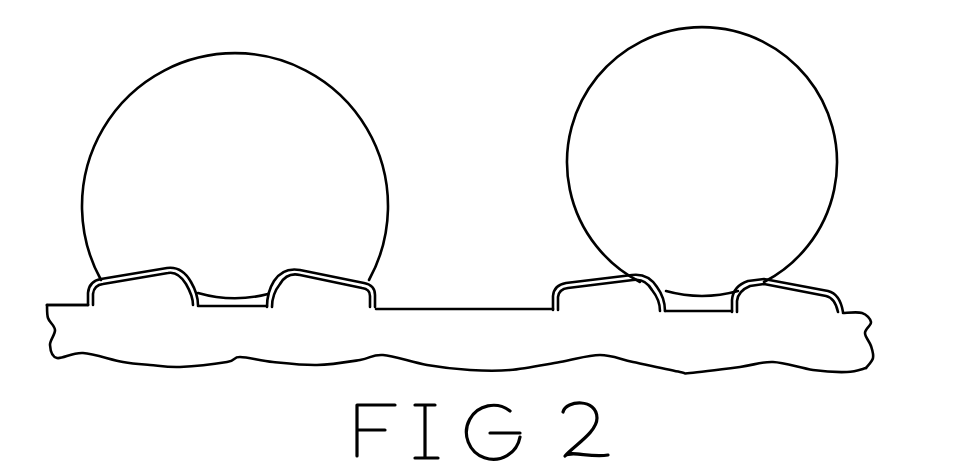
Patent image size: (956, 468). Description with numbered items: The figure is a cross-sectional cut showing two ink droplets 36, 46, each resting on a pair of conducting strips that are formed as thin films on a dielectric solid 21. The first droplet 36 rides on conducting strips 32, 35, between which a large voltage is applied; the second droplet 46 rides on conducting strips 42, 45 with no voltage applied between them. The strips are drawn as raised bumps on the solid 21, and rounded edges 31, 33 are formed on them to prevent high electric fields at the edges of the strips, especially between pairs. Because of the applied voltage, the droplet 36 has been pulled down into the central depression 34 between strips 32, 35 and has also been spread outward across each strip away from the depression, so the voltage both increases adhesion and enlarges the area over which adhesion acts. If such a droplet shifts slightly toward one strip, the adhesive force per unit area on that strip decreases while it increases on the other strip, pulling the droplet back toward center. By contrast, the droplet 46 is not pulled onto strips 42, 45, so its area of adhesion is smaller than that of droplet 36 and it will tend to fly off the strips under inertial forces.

The dielectric solid 21 is at (460, 339).
The rounded edge 31 is at (88, 292).
The conducting strip 32 is at (137, 278).
The rounded edge 33 is at (187, 277).
The depression 34 is at (235, 308).
The conducting strip 35 is at (335, 283).
The ink droplet 36 is at (235, 166).
The conducting strip 42 is at (615, 282).
The conducting strip 45 is at (800, 288).
The ink droplet 46 is at (702, 161).